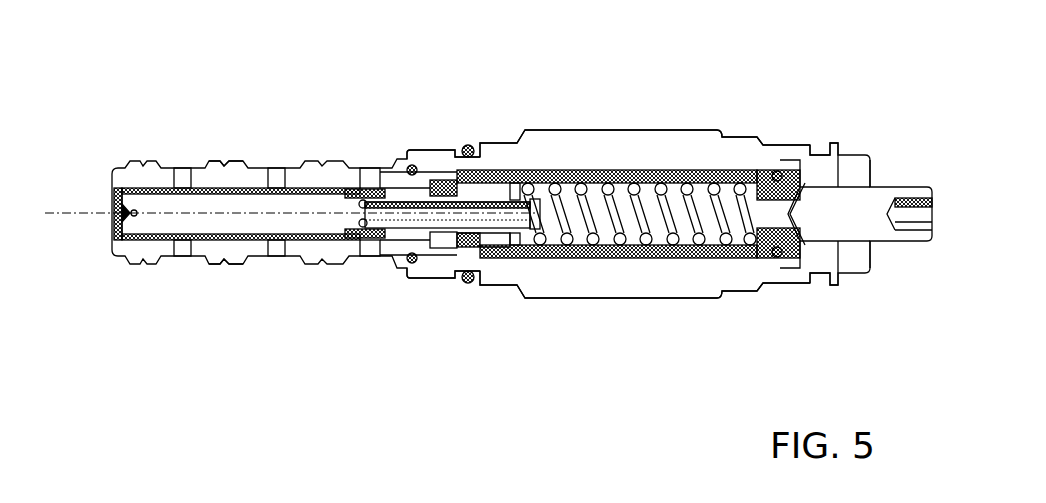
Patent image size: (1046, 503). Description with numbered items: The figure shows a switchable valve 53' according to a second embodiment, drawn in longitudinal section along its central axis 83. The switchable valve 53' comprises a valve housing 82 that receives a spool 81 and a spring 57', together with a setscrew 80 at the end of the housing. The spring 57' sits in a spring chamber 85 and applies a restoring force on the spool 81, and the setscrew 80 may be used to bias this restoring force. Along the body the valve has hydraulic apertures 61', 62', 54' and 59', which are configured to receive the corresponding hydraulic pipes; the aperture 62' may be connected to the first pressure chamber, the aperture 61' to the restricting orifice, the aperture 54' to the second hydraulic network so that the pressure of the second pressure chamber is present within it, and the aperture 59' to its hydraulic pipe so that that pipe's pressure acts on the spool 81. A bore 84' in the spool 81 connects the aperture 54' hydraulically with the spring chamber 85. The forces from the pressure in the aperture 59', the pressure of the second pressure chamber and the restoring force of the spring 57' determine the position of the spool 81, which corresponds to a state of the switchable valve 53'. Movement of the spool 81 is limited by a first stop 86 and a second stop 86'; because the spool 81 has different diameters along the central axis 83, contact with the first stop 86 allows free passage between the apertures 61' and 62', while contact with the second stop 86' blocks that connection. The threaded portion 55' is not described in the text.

The central axis 83 is at (65, 210).
The hydraulic aperture 59' is at (102, 238).
The hydraulic aperture 61' is at (187, 221).
The threaded portion 55' is at (229, 179).
The hydraulic aperture 62' is at (296, 214).
The hydraulic aperture 54' is at (377, 216).
The bore 84' is at (482, 290).
The first stop 86 is at (443, 188).
The second stop 86' is at (480, 145).
The spring chamber 85 is at (596, 182).
The spool 81 is at (470, 250).
The valve housing 82 is at (658, 292).
The spring 57' is at (639, 151).
The switchable valve 53' is at (818, 156).
The setscrew 80 is at (867, 223).